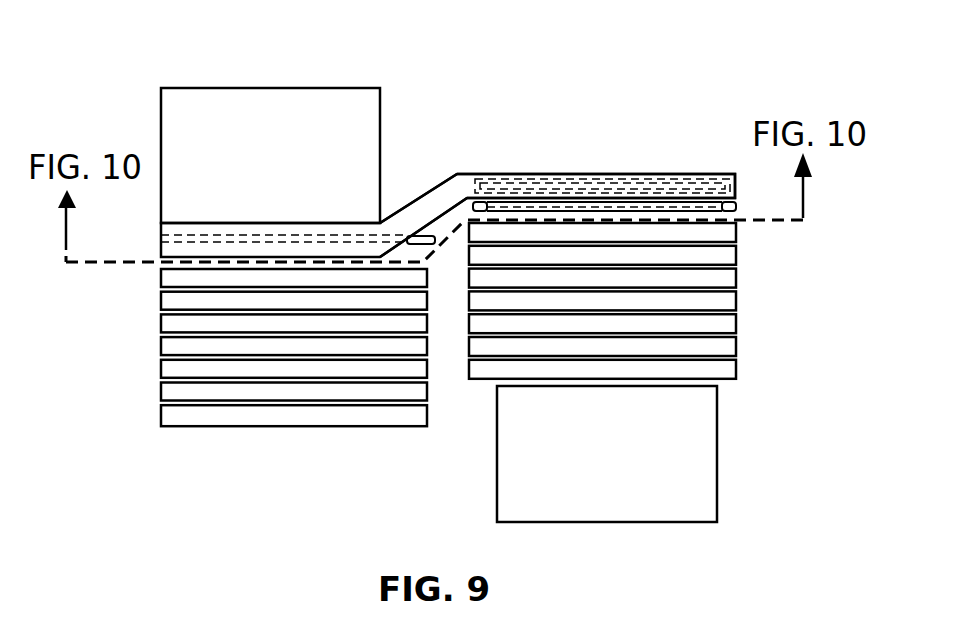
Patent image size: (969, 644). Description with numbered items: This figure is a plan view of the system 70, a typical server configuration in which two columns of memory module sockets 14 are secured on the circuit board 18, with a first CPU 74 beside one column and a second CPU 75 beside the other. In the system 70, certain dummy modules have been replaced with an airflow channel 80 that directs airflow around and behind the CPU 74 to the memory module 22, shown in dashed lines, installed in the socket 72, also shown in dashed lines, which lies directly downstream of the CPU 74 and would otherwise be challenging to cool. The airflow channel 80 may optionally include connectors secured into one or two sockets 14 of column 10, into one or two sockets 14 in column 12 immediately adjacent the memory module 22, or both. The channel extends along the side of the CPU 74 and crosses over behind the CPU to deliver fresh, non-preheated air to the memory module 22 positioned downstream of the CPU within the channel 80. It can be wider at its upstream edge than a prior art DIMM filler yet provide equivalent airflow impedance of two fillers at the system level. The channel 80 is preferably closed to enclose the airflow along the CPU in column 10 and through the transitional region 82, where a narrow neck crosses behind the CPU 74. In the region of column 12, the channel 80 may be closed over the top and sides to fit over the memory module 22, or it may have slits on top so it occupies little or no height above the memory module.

The column 10 is at (293, 78).
The column 12 is at (606, 139).
The sockets 14 is at (161, 237).
The circuit board 18 is at (453, 469).
The memory module 22 is at (645, 179).
The system 70 is at (514, 124).
The memory module socket 72 is at (700, 183).
The CPU 74 is at (380, 100).
The second CPU 75 is at (717, 423).
The airflow channel 80 is at (547, 174).
The transitional region 82 is at (430, 191).